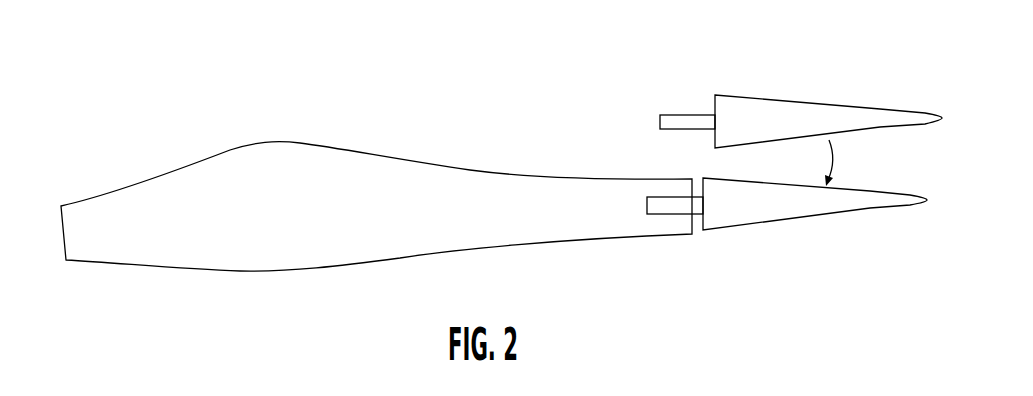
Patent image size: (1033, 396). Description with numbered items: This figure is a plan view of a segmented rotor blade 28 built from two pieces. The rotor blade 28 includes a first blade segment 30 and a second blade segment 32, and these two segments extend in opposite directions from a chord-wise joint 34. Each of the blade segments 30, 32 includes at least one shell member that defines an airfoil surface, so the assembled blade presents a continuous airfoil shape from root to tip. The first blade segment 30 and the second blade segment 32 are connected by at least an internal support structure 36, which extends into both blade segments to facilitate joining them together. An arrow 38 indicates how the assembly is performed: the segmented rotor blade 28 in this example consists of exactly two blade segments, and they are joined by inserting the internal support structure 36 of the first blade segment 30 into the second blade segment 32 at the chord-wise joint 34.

The rotor blade 28 is at (90, 84).
The first blade segment 30 is at (793, 106).
The second blade segment 32 is at (162, 258).
The chord-wise joint 34 is at (698, 230).
The internal support structure 36 is at (679, 118).
The arrow 38 is at (835, 156).